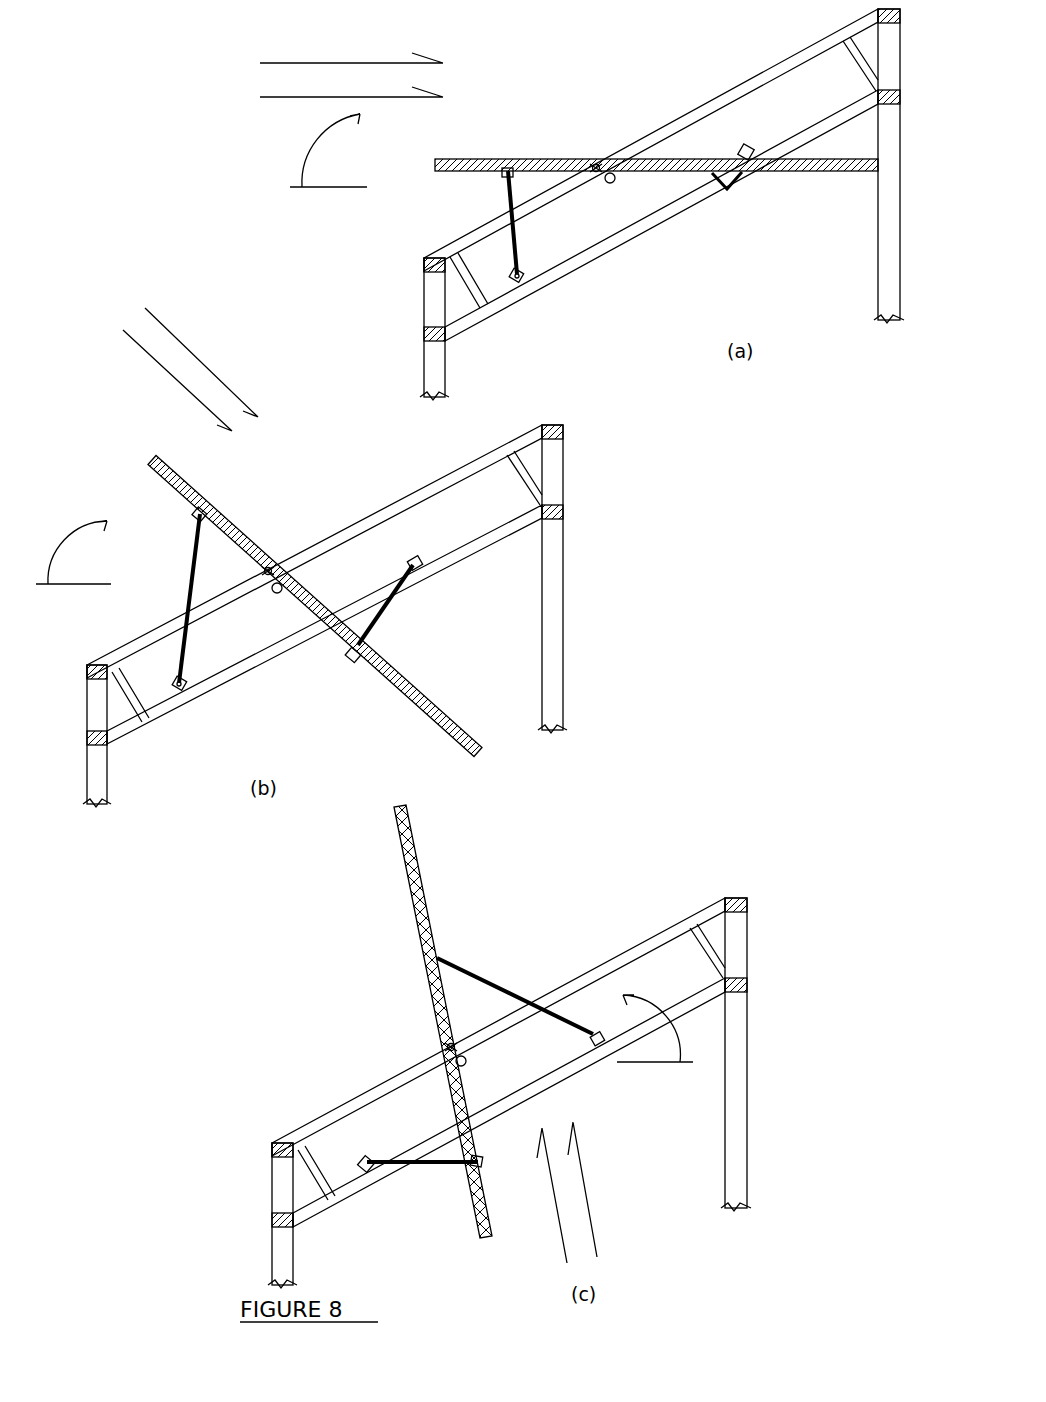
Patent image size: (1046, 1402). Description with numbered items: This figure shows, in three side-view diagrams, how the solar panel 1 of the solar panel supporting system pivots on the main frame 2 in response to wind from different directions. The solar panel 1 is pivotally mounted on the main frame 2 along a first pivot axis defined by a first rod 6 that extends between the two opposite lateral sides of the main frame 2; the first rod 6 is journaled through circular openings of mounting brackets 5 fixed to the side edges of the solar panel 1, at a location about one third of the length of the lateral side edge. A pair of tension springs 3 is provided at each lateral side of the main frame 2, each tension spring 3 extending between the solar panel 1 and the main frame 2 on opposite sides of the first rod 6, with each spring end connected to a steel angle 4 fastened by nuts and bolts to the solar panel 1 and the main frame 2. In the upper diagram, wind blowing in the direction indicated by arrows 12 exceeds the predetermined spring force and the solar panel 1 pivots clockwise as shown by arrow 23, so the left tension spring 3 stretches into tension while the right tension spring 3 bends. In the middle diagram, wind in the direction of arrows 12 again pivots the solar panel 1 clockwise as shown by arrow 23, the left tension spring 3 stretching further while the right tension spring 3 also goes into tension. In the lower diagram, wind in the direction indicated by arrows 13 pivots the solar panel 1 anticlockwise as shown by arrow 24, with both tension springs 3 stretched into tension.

The solar panel 1 is at (480, 160).
The main frame 2 is at (447, 245).
The tension spring 3 is at (503, 203).
The steel angle 4 is at (517, 312).
The mounting bracket 5 is at (598, 165).
The first rod 6 is at (616, 180).
The arrows indicating wind direction 12 is at (310, 62).
The arrows indicating wind direction 13 is at (588, 1198).
The arrow indicating clockwise pivoting 23 is at (317, 138).
The arrow indicating anticlockwise pivoting 24 is at (668, 1013).